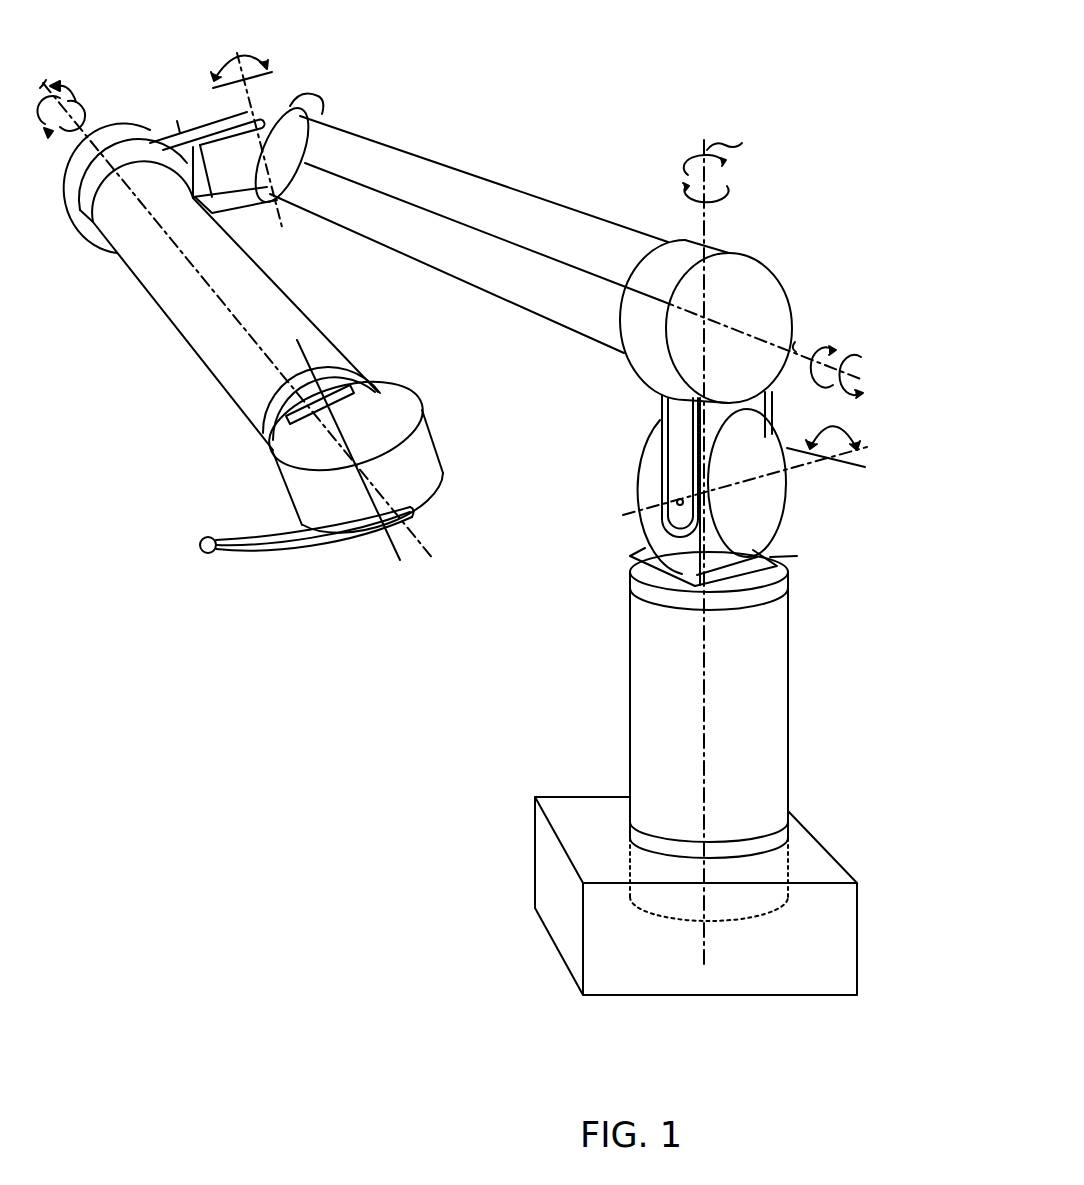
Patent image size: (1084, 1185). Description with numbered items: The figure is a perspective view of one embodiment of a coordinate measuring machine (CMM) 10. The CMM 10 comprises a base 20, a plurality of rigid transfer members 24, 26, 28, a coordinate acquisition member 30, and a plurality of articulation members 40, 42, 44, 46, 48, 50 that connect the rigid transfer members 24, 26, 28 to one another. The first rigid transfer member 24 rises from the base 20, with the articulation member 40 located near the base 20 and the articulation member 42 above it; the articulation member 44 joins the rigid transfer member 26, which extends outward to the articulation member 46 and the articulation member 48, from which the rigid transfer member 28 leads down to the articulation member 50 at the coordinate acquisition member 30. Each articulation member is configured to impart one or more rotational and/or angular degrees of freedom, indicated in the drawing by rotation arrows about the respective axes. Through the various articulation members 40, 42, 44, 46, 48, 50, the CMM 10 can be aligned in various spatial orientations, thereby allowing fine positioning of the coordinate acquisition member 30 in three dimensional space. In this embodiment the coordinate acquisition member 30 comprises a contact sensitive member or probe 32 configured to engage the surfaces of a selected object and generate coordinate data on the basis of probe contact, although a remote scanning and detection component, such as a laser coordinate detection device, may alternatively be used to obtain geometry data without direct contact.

The coordinate measuring machine 10 is at (666, 41).
The base 20 is at (548, 862).
The rigid transfer member 24 is at (768, 665).
The rigid transfer member 26 is at (418, 173).
The rigid transfer member 28 is at (167, 300).
The coordinate acquisition member 30 is at (289, 553).
The probe 32 is at (212, 556).
The articulation member 40 is at (778, 862).
The articulation member 42 is at (772, 505).
The articulation member 44 is at (710, 248).
The articulation member 46 is at (296, 104).
The articulation member 48 is at (73, 199).
The articulation member 50 is at (428, 447).